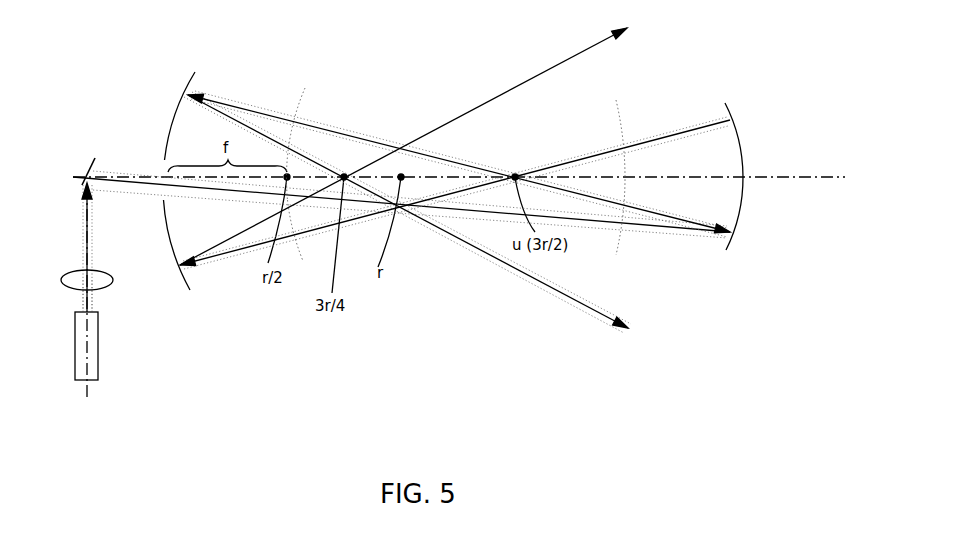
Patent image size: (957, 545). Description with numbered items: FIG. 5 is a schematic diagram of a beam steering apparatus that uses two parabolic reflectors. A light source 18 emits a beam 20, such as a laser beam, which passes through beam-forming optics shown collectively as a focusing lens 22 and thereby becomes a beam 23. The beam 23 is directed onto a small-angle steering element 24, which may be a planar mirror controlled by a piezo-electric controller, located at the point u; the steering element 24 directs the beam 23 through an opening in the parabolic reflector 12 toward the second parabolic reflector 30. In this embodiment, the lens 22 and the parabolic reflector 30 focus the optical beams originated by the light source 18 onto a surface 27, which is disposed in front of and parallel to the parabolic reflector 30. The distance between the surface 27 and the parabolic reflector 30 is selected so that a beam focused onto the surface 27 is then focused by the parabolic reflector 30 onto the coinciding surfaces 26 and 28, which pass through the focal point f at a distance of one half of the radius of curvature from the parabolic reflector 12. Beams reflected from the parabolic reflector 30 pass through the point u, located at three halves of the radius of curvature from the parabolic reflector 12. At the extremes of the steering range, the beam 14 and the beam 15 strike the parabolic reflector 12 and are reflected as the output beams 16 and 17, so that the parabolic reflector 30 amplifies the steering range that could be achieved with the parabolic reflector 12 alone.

The parabolic reflector 12 is at (181, 108).
The beam 14 is at (380, 142).
The beam 15 is at (678, 132).
The beam 16 is at (507, 263).
The beam 17 is at (532, 77).
The light source 18 is at (98, 363).
The beam 20 is at (82, 303).
The focusing lens 22 is at (73, 273).
The beam 23 is at (87, 220).
The steering element 24 is at (93, 165).
The surface 26 is at (302, 103).
The surface 27 is at (620, 115).
The surface 28 is at (305, 258).
The parabolic reflector 30 is at (732, 115).